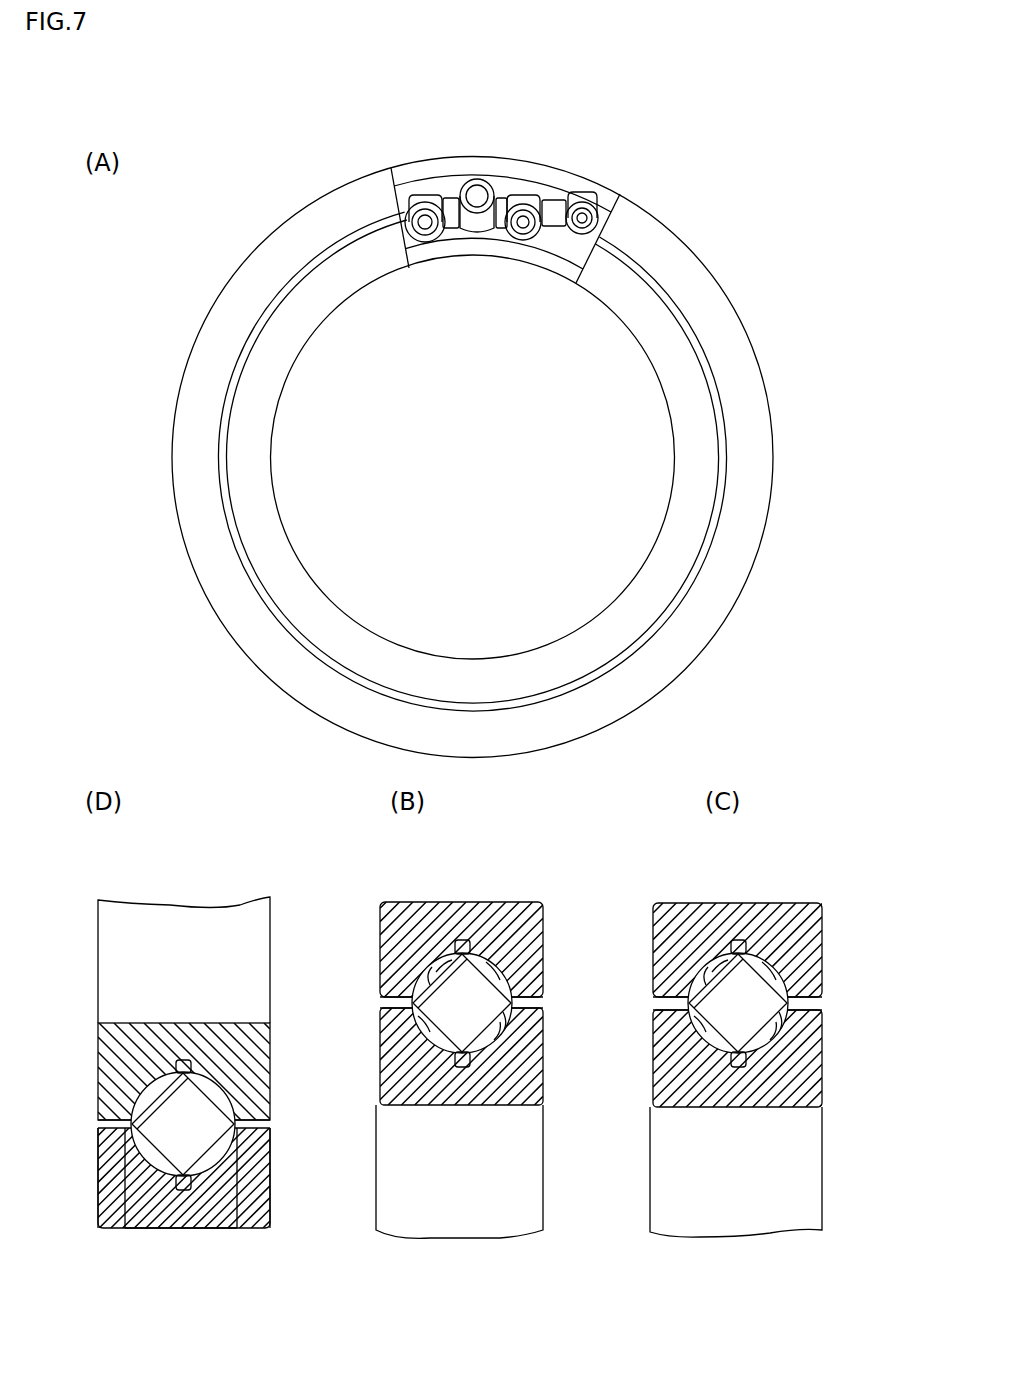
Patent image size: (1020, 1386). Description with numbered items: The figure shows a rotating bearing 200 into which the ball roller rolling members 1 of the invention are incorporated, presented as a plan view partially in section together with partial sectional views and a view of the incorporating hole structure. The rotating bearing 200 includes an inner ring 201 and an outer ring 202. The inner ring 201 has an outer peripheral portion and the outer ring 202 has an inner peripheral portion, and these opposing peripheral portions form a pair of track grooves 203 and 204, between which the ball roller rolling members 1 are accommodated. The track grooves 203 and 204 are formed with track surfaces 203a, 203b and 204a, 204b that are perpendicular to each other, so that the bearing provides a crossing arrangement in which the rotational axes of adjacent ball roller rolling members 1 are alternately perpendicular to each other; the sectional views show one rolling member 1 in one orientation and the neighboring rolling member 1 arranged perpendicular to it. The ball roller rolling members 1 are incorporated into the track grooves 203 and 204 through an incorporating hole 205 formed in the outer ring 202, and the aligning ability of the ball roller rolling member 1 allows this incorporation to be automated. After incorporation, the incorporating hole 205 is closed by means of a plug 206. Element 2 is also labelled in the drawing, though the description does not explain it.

The ball roller rolling member 1 is at (422, 197).
The retainer piece 2 is at (103, 1160).
The rotating bearing 200 is at (655, 190).
The inner ring 201 is at (650, 325).
The outer ring 202 is at (723, 325).
The track groove 203 is at (500, 235).
The track surface 203a is at (507, 1018).
The track surface 203b is at (413, 1013).
The track groove 204 is at (512, 192).
The track surface 204a is at (442, 967).
The track surface 204b is at (503, 970).
The incorporating hole 205 is at (225, 1215).
The plug 206 is at (152, 1200).